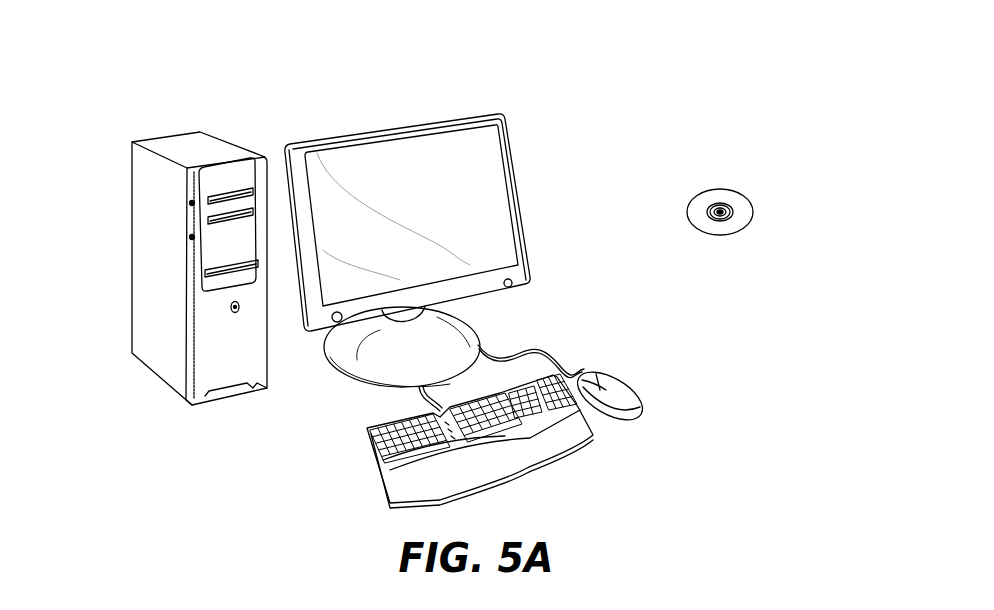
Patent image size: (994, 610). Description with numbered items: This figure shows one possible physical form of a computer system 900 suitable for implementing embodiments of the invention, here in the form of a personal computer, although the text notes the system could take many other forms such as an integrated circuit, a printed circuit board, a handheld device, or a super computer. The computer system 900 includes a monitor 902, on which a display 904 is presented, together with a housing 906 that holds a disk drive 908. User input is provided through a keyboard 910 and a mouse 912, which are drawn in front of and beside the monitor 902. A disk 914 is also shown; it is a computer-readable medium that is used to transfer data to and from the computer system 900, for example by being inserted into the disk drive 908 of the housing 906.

The computer system 900 is at (642, 98).
The monitor 902 is at (455, 250).
The display 904 is at (478, 155).
The housing 906 is at (224, 238).
The disk drive 908 is at (247, 268).
The keyboard 910 is at (380, 470).
The mouse 912 is at (632, 388).
The disk 914 is at (737, 188).